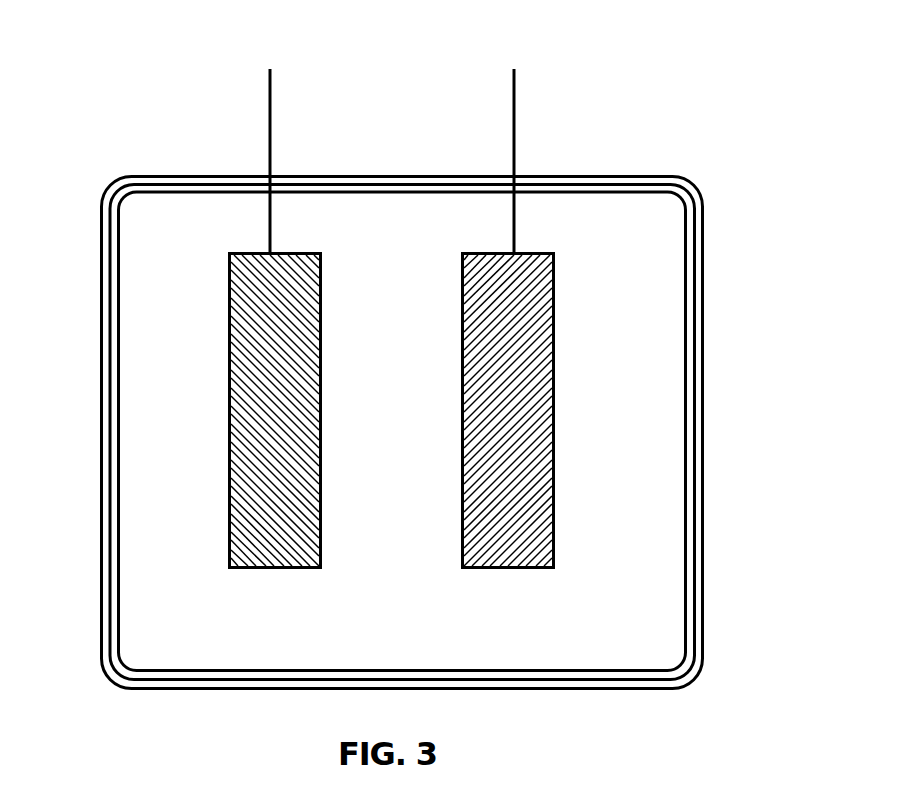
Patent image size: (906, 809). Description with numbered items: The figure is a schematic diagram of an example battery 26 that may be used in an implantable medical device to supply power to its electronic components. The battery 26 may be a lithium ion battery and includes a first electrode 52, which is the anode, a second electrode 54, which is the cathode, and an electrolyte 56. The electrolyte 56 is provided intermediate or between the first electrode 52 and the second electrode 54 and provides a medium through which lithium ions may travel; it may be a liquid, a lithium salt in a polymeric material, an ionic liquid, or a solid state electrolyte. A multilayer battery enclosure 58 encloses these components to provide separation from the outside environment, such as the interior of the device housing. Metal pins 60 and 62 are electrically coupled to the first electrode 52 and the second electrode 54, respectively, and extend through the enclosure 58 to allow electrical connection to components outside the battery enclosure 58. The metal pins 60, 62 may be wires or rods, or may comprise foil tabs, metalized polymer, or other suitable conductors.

The battery 26 is at (702, 70).
The first electrode 52 is at (240, 335).
The second electrode 54 is at (545, 335).
The electrolyte 56 is at (403, 618).
The multilayer battery enclosure 58 is at (100, 240).
The metal pin 60 is at (270, 145).
The metal pin 62 is at (514, 145).